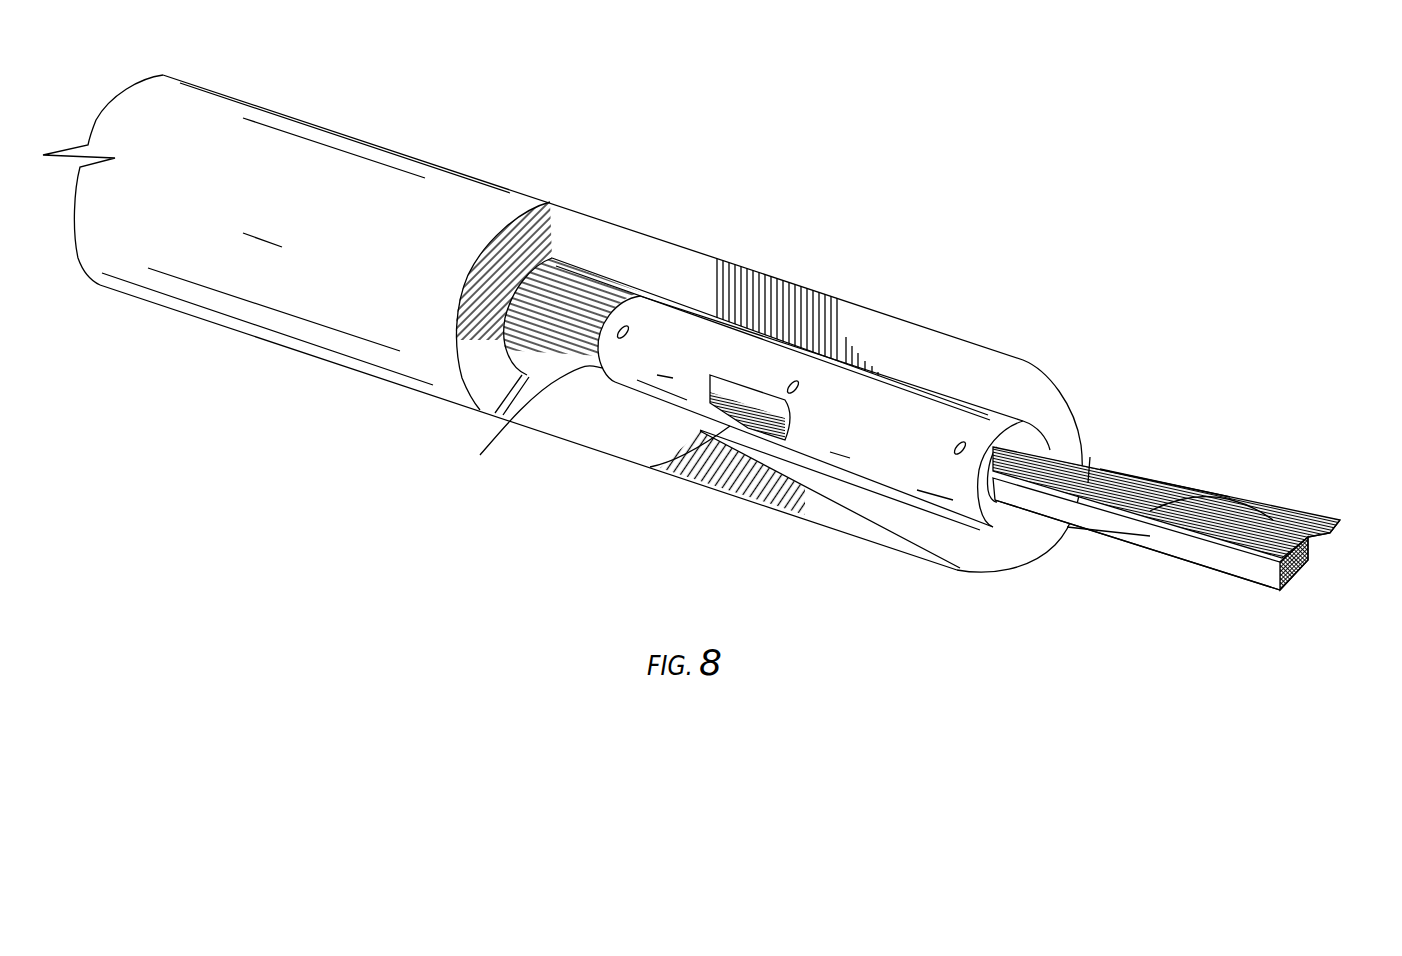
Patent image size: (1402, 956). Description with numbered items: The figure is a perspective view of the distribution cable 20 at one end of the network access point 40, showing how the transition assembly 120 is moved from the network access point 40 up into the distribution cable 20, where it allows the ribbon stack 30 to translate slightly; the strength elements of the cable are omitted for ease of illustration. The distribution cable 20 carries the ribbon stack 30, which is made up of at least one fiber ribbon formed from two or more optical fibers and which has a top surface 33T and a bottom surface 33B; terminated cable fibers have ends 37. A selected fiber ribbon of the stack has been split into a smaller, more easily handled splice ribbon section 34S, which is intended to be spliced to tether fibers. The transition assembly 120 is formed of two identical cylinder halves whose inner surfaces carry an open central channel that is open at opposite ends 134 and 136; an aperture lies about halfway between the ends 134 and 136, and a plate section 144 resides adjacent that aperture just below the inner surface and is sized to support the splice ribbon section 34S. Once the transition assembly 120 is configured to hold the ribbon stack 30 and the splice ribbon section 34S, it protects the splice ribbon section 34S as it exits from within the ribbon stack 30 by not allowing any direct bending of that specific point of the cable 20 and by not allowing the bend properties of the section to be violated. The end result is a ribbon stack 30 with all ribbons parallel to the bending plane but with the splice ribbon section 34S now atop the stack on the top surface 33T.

The distribution cable 20 is at (565, 188).
The ribbon stack 30 is at (1138, 473).
The top surface 33T is at (1175, 483).
The bottom surface 33B is at (1175, 561).
The splice ribbon section 34S is at (1092, 478).
The ends 37 is at (1337, 523).
The network access point 40 is at (1077, 543).
The transition assembly 120 is at (895, 449).
The end 134 is at (527, 375).
The end 136 is at (1080, 457).
The plate section 144 is at (757, 397).